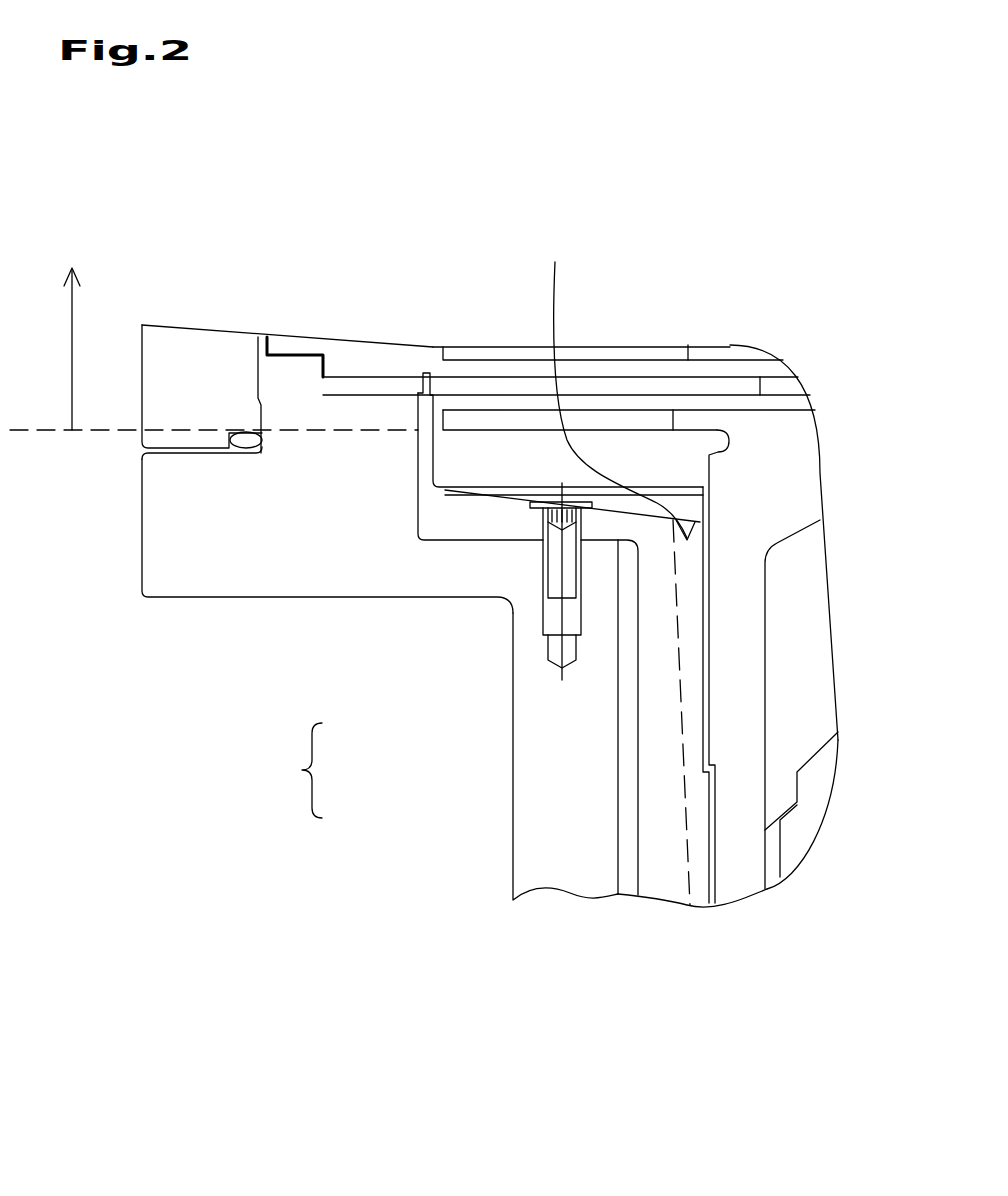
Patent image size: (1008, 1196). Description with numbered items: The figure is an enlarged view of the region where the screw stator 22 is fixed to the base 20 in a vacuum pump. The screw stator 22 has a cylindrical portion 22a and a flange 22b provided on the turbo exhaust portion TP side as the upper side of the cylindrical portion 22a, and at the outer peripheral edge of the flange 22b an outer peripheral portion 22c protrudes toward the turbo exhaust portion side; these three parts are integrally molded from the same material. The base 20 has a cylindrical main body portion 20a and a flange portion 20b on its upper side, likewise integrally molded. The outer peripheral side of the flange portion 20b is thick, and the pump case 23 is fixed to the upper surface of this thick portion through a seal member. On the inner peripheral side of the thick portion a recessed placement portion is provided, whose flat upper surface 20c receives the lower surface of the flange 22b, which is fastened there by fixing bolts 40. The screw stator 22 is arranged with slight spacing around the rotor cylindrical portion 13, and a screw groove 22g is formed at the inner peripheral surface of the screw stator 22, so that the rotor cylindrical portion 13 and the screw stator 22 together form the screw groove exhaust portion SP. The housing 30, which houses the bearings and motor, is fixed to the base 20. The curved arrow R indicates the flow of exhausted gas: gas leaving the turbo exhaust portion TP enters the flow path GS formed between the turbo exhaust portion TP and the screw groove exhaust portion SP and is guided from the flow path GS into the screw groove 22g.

The turbo exhaust portion TP is at (212, 349).
The pump case 23 is at (187, 358).
The base 20 is at (418, 708).
The main body portion 20a is at (532, 808).
The flange portion 20b is at (203, 578).
The upper surface 20c is at (473, 545).
The screw stator 22 is at (627, 616).
The cylindrical portion 22a is at (665, 870).
The flange 22b is at (497, 513).
The outer peripheral portion 22c is at (427, 385).
The screw groove 22g is at (688, 612).
The flow path GS is at (630, 460).
The housing 30 is at (738, 870).
The rotor cylindrical portion 13 is at (727, 715).
The screw groove exhaust portion SP is at (283, 770).
The fixing bolt 40 is at (552, 578).
The curved arrow R is at (620, 566).